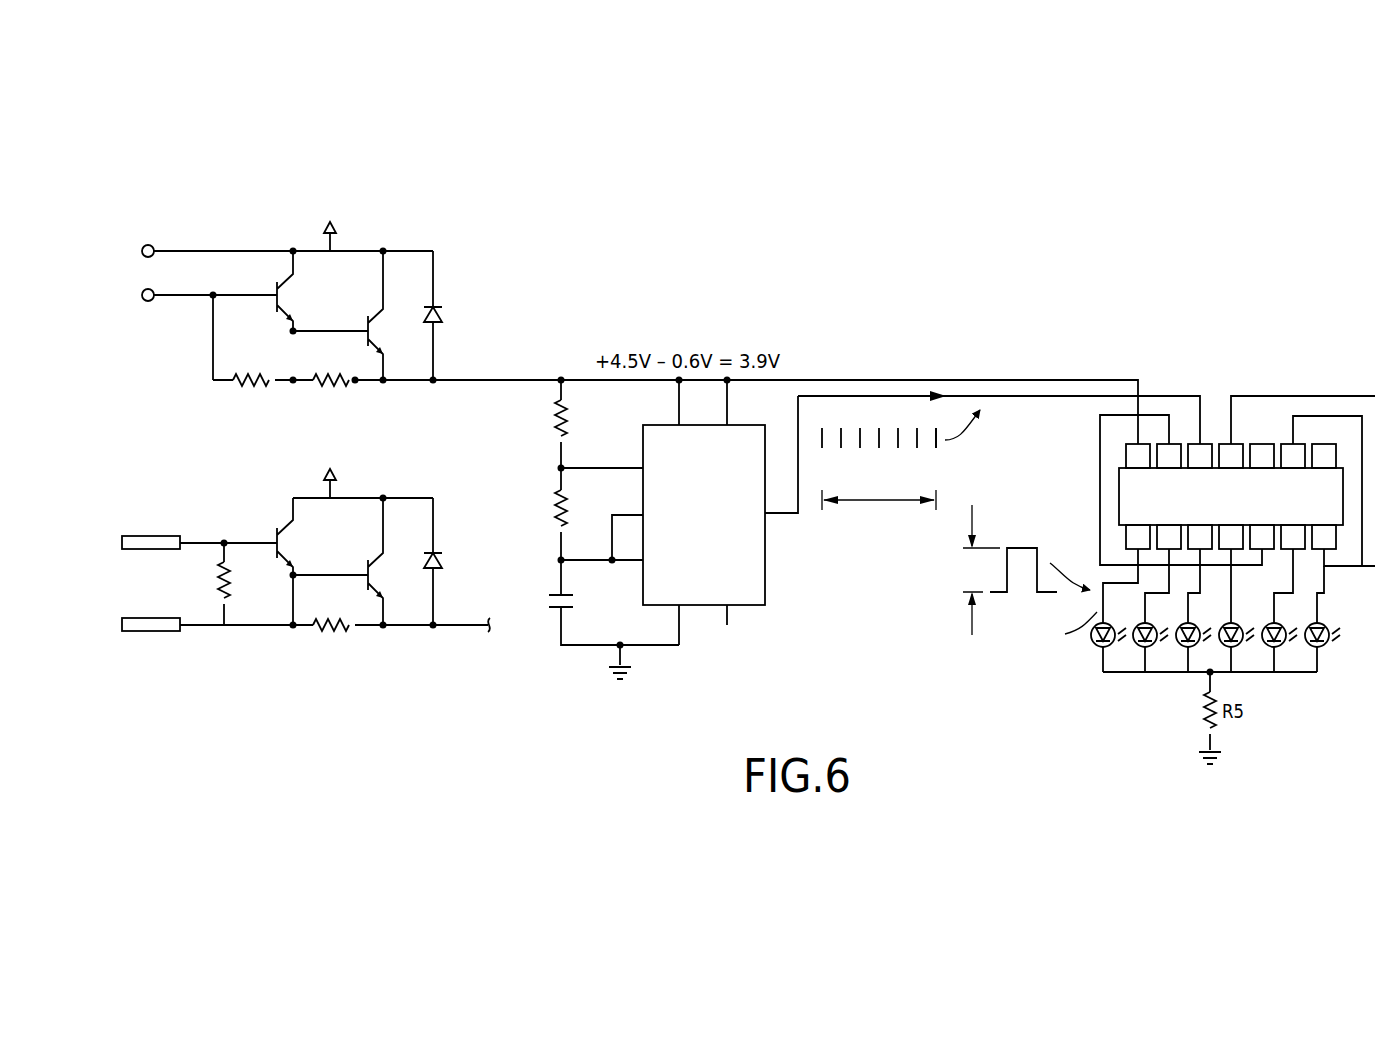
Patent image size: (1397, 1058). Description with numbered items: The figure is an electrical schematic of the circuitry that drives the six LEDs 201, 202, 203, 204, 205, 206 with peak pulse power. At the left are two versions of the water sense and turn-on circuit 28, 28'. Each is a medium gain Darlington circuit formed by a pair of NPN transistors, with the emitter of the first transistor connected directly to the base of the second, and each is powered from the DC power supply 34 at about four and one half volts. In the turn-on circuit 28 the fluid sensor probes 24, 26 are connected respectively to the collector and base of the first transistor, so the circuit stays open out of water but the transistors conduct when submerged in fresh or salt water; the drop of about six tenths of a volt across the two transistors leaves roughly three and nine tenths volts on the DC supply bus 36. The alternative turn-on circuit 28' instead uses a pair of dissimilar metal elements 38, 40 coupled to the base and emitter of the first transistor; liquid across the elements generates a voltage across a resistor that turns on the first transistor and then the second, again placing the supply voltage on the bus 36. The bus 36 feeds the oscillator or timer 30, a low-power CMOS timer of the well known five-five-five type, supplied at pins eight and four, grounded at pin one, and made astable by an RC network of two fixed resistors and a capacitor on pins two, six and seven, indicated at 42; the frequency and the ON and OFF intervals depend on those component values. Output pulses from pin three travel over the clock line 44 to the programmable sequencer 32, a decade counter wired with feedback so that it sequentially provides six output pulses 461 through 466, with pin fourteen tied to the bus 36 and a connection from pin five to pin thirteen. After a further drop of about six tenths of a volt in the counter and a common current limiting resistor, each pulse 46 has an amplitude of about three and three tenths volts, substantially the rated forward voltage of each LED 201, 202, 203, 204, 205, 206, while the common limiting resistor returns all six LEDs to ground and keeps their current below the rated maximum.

The fluid sensor probe 24 is at (148, 243).
The fluid sensor probe 26 is at (148, 302).
The water sense and turn-on circuit 28 is at (333, 274).
The alternative turn-on circuit 28' is at (326, 514).
The oscillator or timer 30 is at (779, 553).
The programmable sequencer 32 is at (1075, 462).
The DC power supply 34 is at (300, 206).
The DC supply bus 36 is at (503, 378).
The dissimilar metal element 38 is at (145, 535).
The dissimilar metal element 40 is at (147, 632).
The timing network (R3, R4, C1) 42 is at (543, 485).
The clock line 44 is at (1012, 392).
The pulse 46 is at (1027, 548).
The first output pulse 461 is at (832, 432).
The sixth output pulse 466 is at (929, 435).
The LED 201 is at (1097, 648).
The LED 202 is at (1140, 650).
The LED 203 is at (1192, 638).
The LED 204 is at (1235, 638).
The LED 205 is at (1278, 650).
The LED 206 is at (1325, 650).